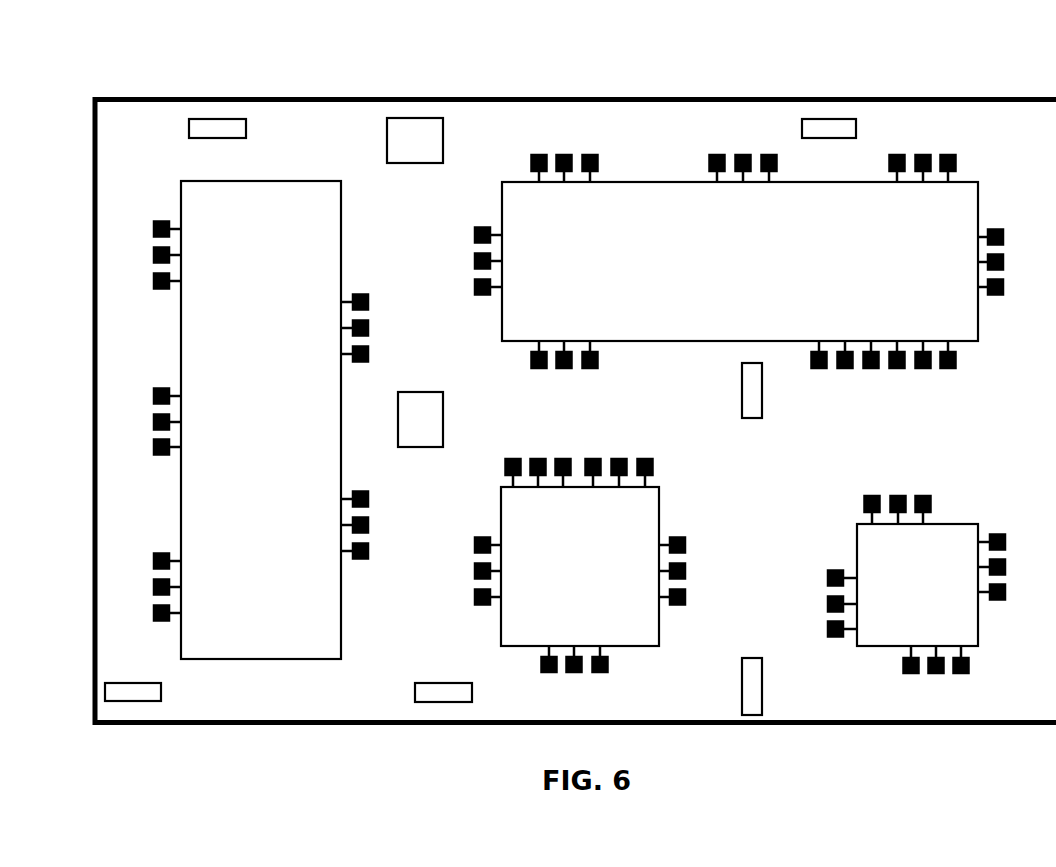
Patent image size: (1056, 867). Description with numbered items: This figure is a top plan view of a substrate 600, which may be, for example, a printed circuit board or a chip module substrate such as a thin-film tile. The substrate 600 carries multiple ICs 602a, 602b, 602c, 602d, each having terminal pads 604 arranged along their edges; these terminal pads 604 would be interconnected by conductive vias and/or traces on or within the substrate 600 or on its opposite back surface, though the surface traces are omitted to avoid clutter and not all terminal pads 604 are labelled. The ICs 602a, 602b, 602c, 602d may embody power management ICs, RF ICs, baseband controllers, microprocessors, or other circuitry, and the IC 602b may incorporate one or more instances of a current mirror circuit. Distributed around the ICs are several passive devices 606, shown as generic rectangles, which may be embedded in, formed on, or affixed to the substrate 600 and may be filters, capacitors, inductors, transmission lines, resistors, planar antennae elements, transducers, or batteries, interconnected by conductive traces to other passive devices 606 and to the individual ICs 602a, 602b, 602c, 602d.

The substrate 600 is at (616, 97).
The IC 602a is at (181, 181).
The IC 602b is at (682, 182).
The IC 602c is at (500, 520).
The IC 602d is at (856, 550).
The terminal pads 604 is at (472, 235).
The passive devices 606 is at (246, 128).